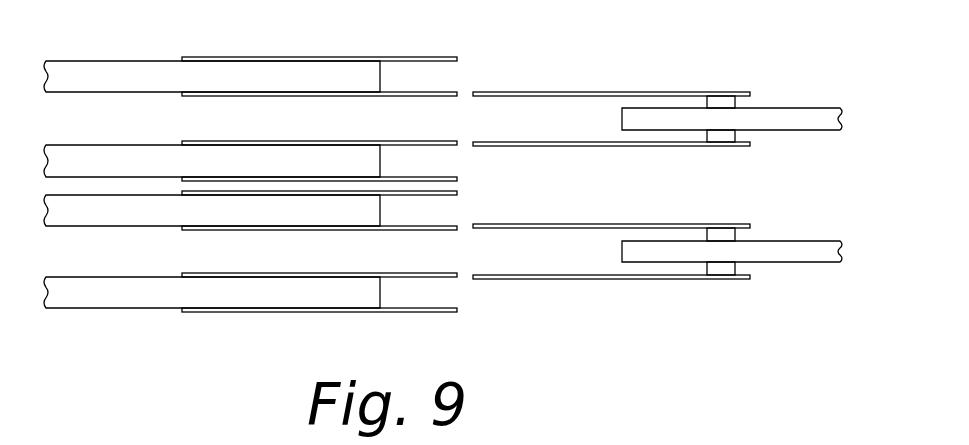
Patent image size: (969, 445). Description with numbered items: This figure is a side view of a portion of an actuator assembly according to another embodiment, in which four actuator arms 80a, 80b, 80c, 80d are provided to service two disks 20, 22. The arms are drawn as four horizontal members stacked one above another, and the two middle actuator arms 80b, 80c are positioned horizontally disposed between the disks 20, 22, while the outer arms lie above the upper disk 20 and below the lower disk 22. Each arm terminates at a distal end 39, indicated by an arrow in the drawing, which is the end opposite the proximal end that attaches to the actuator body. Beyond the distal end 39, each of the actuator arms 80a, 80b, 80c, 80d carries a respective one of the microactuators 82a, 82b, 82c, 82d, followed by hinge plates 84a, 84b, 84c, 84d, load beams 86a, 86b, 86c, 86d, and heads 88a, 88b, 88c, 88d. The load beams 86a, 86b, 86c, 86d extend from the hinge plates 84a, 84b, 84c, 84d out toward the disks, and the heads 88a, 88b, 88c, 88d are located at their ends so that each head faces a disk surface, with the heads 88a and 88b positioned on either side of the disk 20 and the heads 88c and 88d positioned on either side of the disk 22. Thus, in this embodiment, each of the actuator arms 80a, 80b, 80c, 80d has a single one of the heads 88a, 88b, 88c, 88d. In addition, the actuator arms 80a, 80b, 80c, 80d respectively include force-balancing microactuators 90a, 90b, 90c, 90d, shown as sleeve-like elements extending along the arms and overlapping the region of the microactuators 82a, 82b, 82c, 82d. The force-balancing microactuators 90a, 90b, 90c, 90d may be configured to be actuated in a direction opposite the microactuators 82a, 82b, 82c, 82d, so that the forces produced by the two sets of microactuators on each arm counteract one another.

The disk 20 is at (825, 108).
The disk 22 is at (825, 242).
The distal end 39 is at (392, 77).
The actuator arm 80a is at (115, 61).
The actuator arm 80b is at (117, 145).
The actuator arm 80c is at (103, 227).
The actuator arm 80d is at (102, 309).
The microactuator 82a is at (250, 96).
The microactuator 82b is at (352, 141).
The microactuator 82c is at (250, 231).
The microactuator 82d is at (352, 273).
The hinge plate 84a is at (466, 97).
The hinge plate 84b is at (465, 141).
The hinge plate 84c is at (466, 229).
The hinge plate 84d is at (465, 274).
The load beam 86a is at (567, 92).
The load beam 86b is at (545, 147).
The load beam 86c is at (625, 224).
The load beam 86d is at (570, 280).
The head 88a is at (735, 103).
The head 88b is at (738, 137).
The head 88c is at (735, 237).
The head 88d is at (738, 270).
The force-balancing microactuator 90a is at (319, 77).
The force-balancing microactuator 90b is at (312, 139).
The force-balancing microactuator 90c is at (307, 230).
The force-balancing microactuator 90d is at (319, 290).